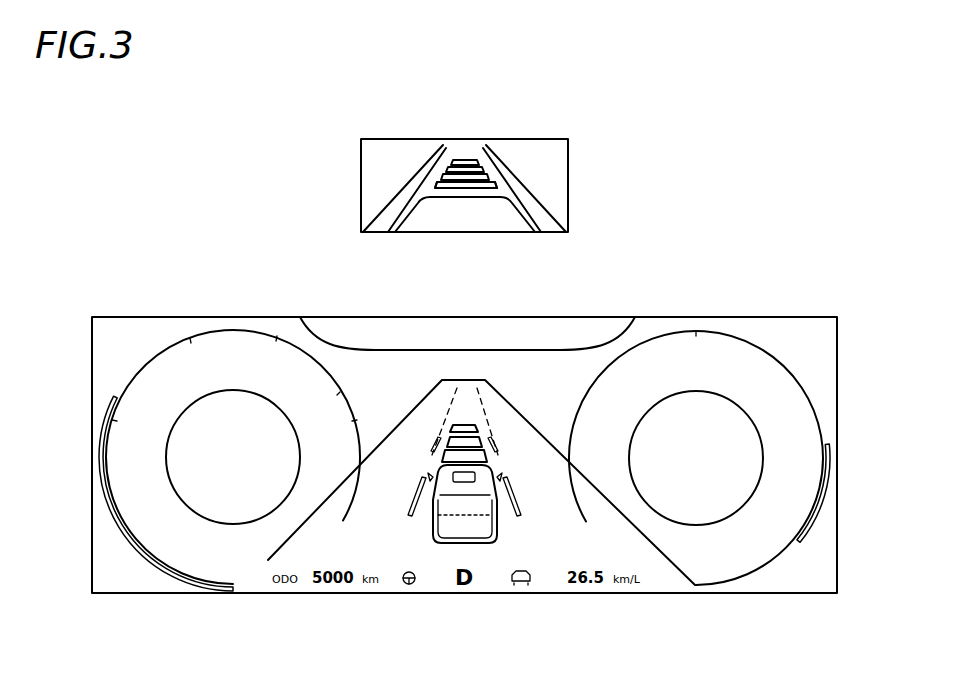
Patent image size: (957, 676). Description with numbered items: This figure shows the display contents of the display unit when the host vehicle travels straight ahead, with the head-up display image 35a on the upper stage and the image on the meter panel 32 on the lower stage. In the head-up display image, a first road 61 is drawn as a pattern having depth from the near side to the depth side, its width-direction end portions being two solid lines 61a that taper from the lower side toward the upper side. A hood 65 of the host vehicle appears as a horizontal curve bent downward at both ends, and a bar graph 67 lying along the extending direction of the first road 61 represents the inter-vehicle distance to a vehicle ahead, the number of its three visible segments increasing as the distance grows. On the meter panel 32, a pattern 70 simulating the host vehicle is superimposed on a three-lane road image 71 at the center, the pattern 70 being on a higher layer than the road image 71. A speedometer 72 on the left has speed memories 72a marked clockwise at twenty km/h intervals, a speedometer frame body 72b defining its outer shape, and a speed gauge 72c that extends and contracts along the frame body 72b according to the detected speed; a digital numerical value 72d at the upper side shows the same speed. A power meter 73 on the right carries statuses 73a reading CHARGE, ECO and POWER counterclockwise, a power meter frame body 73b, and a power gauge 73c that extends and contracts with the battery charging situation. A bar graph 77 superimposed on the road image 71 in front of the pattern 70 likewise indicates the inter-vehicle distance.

The meter panel 32 is at (777, 317).
The head-up display area 35a is at (545, 139).
The first road 61 is at (463, 158).
The solid lines 61a is at (402, 190).
The hood 65 is at (496, 200).
The bar graph 67 is at (458, 188).
The pattern simulating the host vehicle 70 is at (478, 528).
The road image 71 is at (548, 528).
The speedometer 72 is at (137, 358).
The speed memories 72a is at (225, 582).
The speedometer frame body 72b is at (167, 345).
The speed gauge 72c is at (100, 460).
The digital numerical value 72d is at (460, 317).
The power meter 73 is at (792, 357).
The statuses 73a is at (606, 365).
The power meter frame body 73b is at (730, 332).
The power gauge 73c is at (818, 508).
The bar graph 77 is at (443, 458).